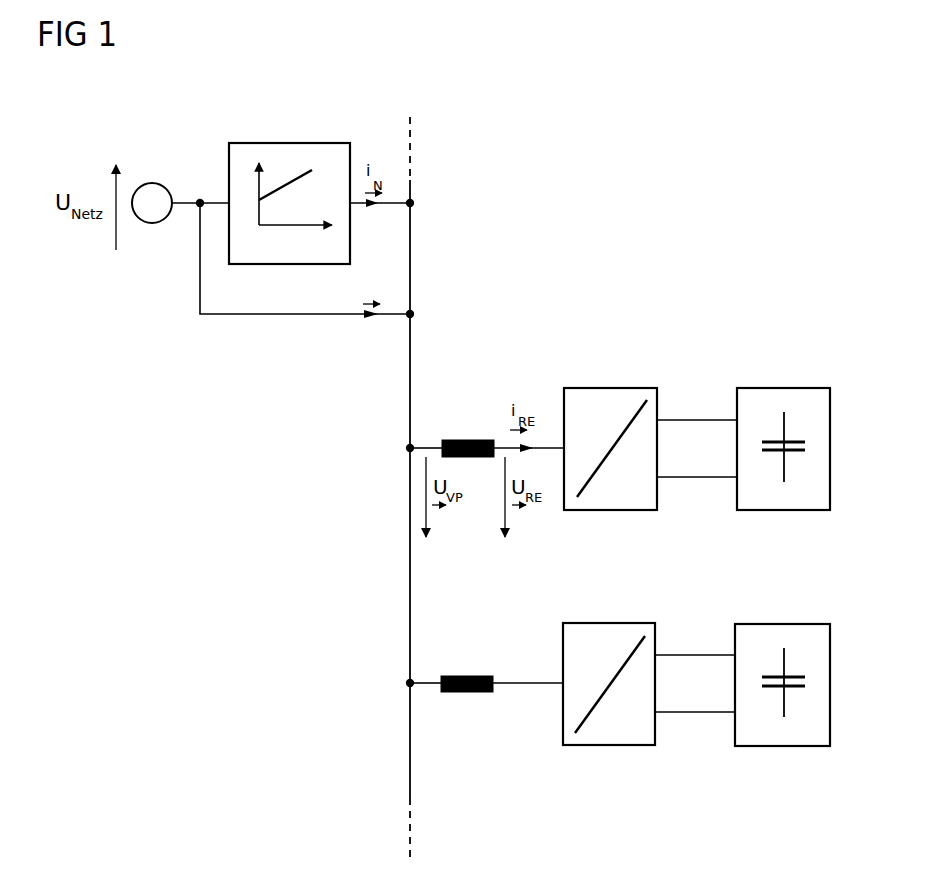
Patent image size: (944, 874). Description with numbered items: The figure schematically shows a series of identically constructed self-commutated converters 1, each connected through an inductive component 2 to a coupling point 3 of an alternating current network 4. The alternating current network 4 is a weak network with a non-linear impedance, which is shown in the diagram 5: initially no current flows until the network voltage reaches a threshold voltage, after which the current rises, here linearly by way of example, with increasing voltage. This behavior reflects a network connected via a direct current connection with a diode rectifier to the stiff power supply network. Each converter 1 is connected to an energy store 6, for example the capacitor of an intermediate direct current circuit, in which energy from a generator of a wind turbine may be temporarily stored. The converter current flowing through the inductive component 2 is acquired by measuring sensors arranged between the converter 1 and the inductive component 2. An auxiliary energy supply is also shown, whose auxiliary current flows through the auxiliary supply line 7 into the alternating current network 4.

The self-commutated converter 1 is at (611, 388).
The inductive component 2 is at (460, 440).
The coupling point 3 is at (409, 587).
The alternating current network 4 is at (390, 148).
The diagram 5 is at (292, 143).
The energy store 6 is at (784, 388).
The auxiliary supply line 7 is at (272, 316).